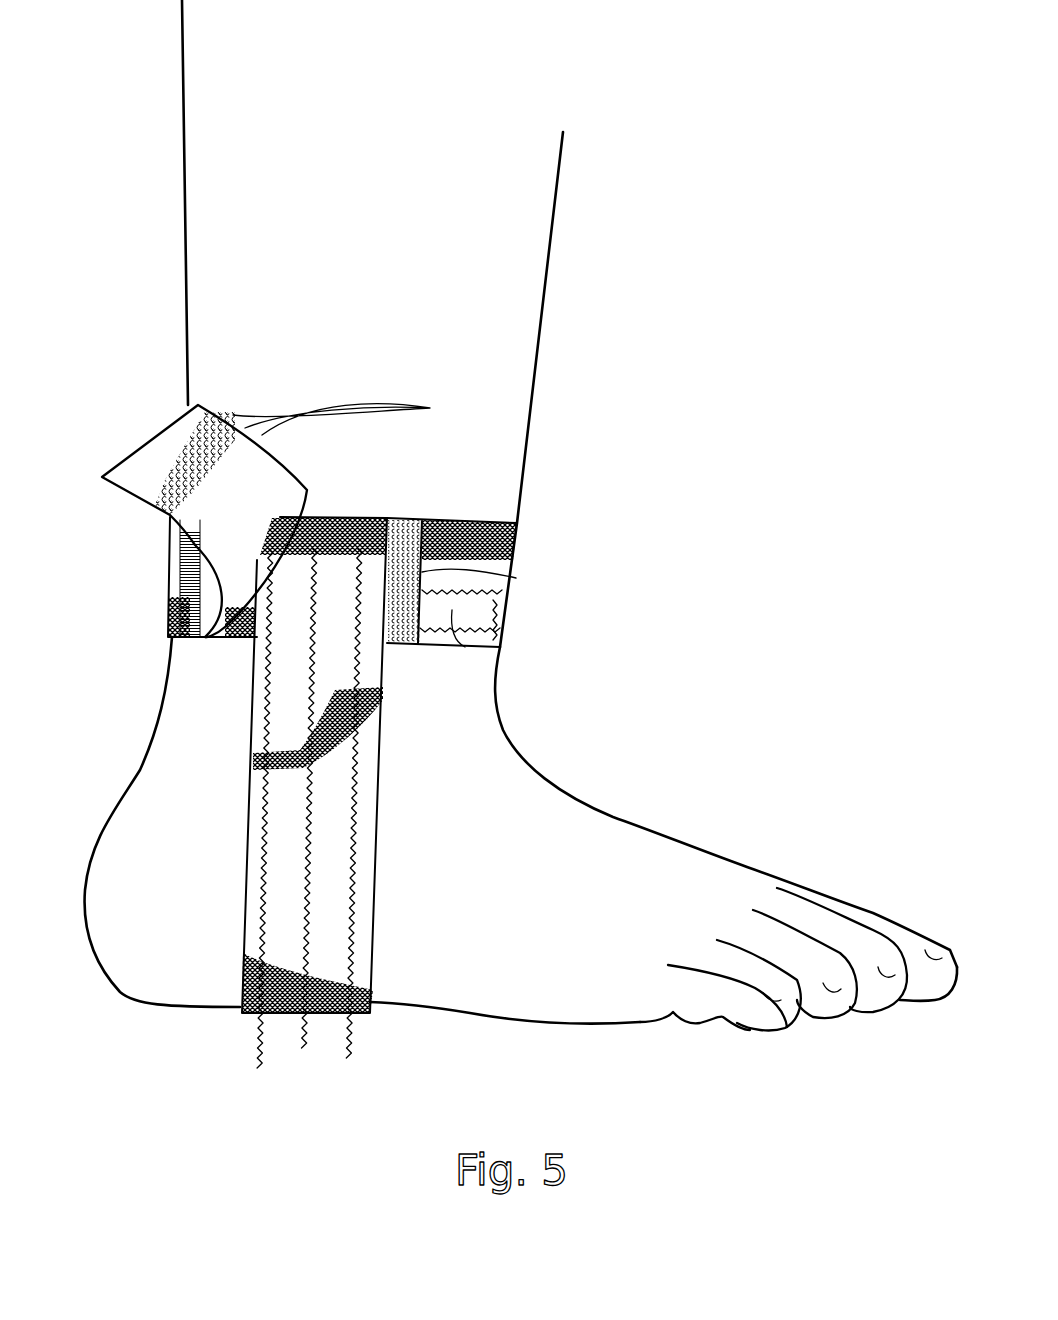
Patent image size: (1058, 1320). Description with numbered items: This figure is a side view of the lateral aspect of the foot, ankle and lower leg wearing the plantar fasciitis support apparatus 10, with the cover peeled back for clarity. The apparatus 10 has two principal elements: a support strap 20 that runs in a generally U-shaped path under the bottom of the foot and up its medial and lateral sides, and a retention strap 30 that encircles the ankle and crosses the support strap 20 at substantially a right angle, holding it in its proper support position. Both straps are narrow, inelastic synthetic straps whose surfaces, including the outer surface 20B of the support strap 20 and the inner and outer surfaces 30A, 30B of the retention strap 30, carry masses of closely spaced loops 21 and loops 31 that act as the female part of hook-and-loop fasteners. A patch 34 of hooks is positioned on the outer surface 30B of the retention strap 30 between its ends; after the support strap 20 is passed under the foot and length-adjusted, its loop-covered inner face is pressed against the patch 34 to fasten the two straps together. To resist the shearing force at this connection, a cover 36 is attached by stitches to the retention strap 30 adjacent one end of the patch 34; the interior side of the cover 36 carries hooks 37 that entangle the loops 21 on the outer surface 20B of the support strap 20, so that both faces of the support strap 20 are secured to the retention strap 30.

The plantar fasciitis support apparatus 10 is at (608, 625).
The support strap 20 is at (262, 1025).
The outer surface of the support strap 20B is at (335, 923).
The loops 21 is at (333, 693).
The retention strap 30 is at (157, 573).
The inner surface of the retention strap 30A is at (133, 480).
The outer surface of the retention strap 30B is at (465, 647).
The loops 31 is at (445, 523).
The patch of hooks 34 is at (420, 570).
The cover 36 is at (165, 443).
The hooks 37 is at (425, 408).